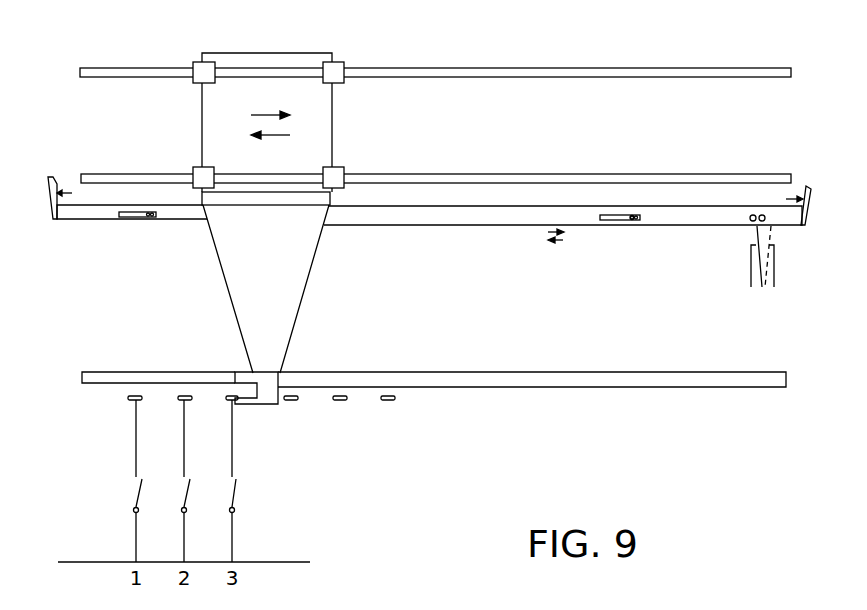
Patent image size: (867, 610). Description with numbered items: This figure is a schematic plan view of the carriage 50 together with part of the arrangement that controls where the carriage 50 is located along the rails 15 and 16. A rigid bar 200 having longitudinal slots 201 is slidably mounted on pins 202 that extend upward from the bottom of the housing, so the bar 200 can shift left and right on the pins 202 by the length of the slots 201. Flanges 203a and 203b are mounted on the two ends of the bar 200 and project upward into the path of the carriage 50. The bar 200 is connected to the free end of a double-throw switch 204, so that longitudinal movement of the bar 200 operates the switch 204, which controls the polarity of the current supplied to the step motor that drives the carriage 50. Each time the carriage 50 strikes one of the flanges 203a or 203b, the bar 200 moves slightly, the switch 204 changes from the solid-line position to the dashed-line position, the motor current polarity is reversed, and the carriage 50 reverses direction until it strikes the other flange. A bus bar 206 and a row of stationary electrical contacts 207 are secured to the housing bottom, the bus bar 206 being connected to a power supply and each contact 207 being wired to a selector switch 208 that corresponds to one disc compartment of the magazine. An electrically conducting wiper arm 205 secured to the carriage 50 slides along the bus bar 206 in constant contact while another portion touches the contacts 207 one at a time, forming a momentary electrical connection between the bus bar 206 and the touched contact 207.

The rail 15 is at (597, 68).
The rail 16 is at (637, 173).
The carriage 50 is at (313, 120).
The rigid bar 200 is at (538, 210).
The longitudinal slots 201 is at (138, 217).
The pins 202 is at (632, 221).
The flange 203a is at (807, 226).
The flange 203b is at (47, 203).
The double-throw switch 204 is at (748, 252).
The wiper arm 205 is at (277, 377).
The bus bar 206 is at (543, 373).
The stationary electrical contacts 207 is at (291, 403).
The selector switch 208 is at (182, 490).